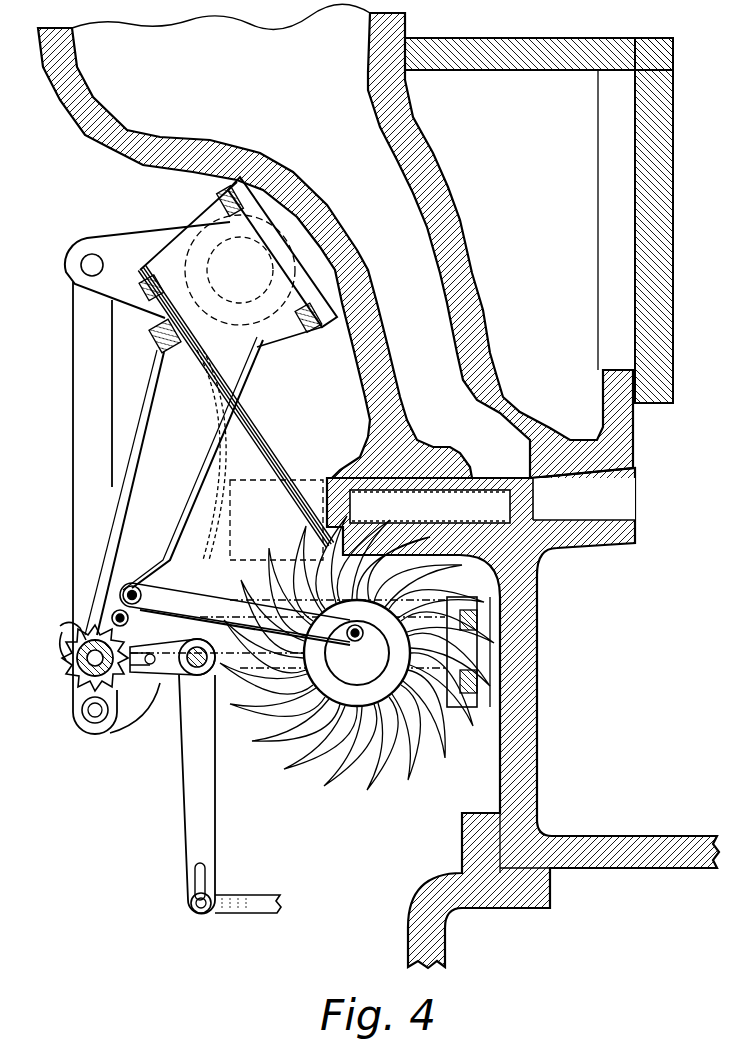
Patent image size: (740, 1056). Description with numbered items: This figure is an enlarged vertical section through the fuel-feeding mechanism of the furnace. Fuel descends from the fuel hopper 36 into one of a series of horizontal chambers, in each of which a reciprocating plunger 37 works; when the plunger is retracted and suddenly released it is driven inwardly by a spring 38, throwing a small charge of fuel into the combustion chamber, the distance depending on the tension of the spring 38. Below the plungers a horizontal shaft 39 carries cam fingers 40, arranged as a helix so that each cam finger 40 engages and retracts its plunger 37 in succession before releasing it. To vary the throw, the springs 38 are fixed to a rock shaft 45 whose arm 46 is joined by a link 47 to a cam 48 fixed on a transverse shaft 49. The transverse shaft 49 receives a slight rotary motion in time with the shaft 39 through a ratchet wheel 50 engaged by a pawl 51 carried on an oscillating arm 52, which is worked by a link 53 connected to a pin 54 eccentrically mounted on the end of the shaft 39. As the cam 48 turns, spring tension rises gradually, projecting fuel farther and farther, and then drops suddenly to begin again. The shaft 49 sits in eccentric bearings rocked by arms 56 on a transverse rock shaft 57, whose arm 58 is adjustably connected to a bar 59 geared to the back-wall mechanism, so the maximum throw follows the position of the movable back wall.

The fuel hopper 36 is at (97, 130).
The plunger 37 is at (488, 478).
The spring 38 is at (262, 423).
The horizontal shaft 39 is at (292, 755).
The cam finger 40 is at (403, 792).
The rock shaft 45 is at (183, 253).
The arm 46 is at (117, 240).
The link 47 is at (73, 481).
The cam 48 is at (143, 735).
The transverse shaft 49 is at (67, 673).
The ratchet wheel 50 is at (72, 637).
The pawl 51 is at (82, 583).
The oscillating arm 52 is at (120, 605).
The link 53 is at (182, 600).
The pin 54 is at (358, 649).
The arm 56 is at (160, 675).
The transverse rock shaft 57 is at (197, 676).
The arm 58 is at (190, 830).
The bar 59 is at (250, 895).